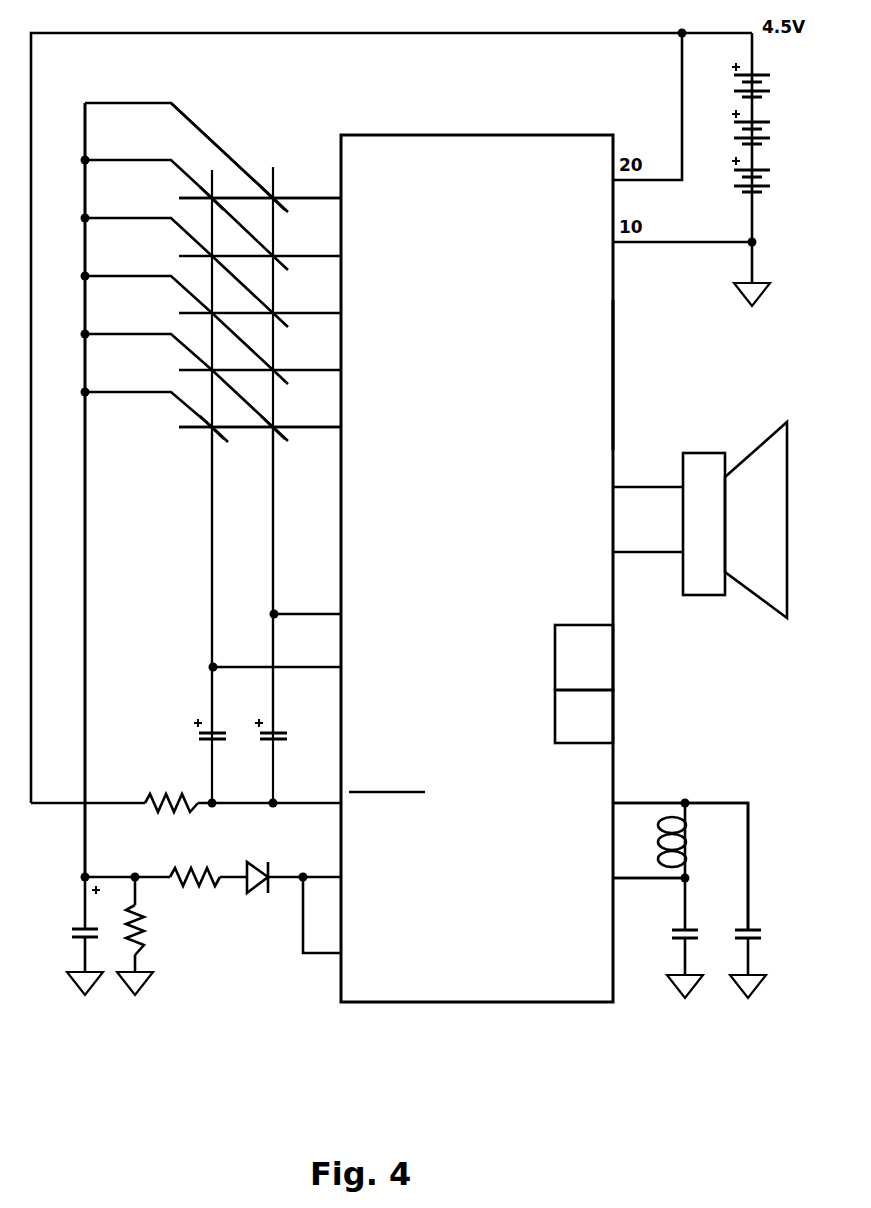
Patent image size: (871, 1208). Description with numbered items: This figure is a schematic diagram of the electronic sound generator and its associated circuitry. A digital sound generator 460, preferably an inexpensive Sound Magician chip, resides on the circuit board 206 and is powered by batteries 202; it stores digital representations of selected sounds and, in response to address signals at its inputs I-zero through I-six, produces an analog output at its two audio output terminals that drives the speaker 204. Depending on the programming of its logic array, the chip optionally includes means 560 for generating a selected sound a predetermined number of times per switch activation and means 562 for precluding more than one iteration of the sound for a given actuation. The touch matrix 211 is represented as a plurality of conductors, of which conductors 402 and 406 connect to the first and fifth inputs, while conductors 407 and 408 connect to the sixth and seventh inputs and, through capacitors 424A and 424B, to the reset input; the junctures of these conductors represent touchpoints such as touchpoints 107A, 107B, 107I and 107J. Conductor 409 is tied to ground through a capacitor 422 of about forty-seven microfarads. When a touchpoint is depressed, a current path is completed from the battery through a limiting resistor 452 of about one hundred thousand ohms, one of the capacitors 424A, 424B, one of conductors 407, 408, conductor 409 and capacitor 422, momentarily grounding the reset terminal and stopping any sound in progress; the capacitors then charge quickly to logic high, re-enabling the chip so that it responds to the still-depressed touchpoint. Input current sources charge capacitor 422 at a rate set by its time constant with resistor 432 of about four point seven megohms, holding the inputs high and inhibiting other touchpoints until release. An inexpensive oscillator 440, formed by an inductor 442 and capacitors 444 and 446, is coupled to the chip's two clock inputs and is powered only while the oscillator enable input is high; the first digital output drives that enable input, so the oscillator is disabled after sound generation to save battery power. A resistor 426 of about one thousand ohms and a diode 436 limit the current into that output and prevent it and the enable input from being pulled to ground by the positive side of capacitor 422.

The digital sound generator 460 is at (500, 1002).
The battery 202 is at (773, 92).
The speaker 204 is at (787, 572).
The circuit board 206 is at (614, 370).
The matrix 211 is at (277, 98).
The touchpoint 107A is at (209, 194).
The touchpoint 107B is at (273, 195).
The touchpoint 107I is at (209, 423).
The touchpoint 107J is at (278, 424).
The conductor 402 is at (318, 197).
The conductor 406 is at (313, 415).
The conductor 407 is at (274, 543).
The conductor 408 is at (212, 573).
The conductor 409 is at (86, 500).
The capacitor 424A is at (200, 737).
The capacitor 424B is at (284, 737).
The limiting resistor 452 is at (148, 797).
The resistor 426 is at (192, 870).
The diode 436 is at (270, 872).
The capacitor 422 is at (84, 925).
The resistor 432 is at (140, 950).
The oscillator 440 is at (810, 794).
The inductor 442 is at (688, 848).
The capacitor 444 is at (698, 930).
The capacitor 446 is at (761, 930).
The means for controlling the generating of a selected sound 560 is at (597, 656).
The means for precluding generation of more than one iteration 562 is at (605, 722).